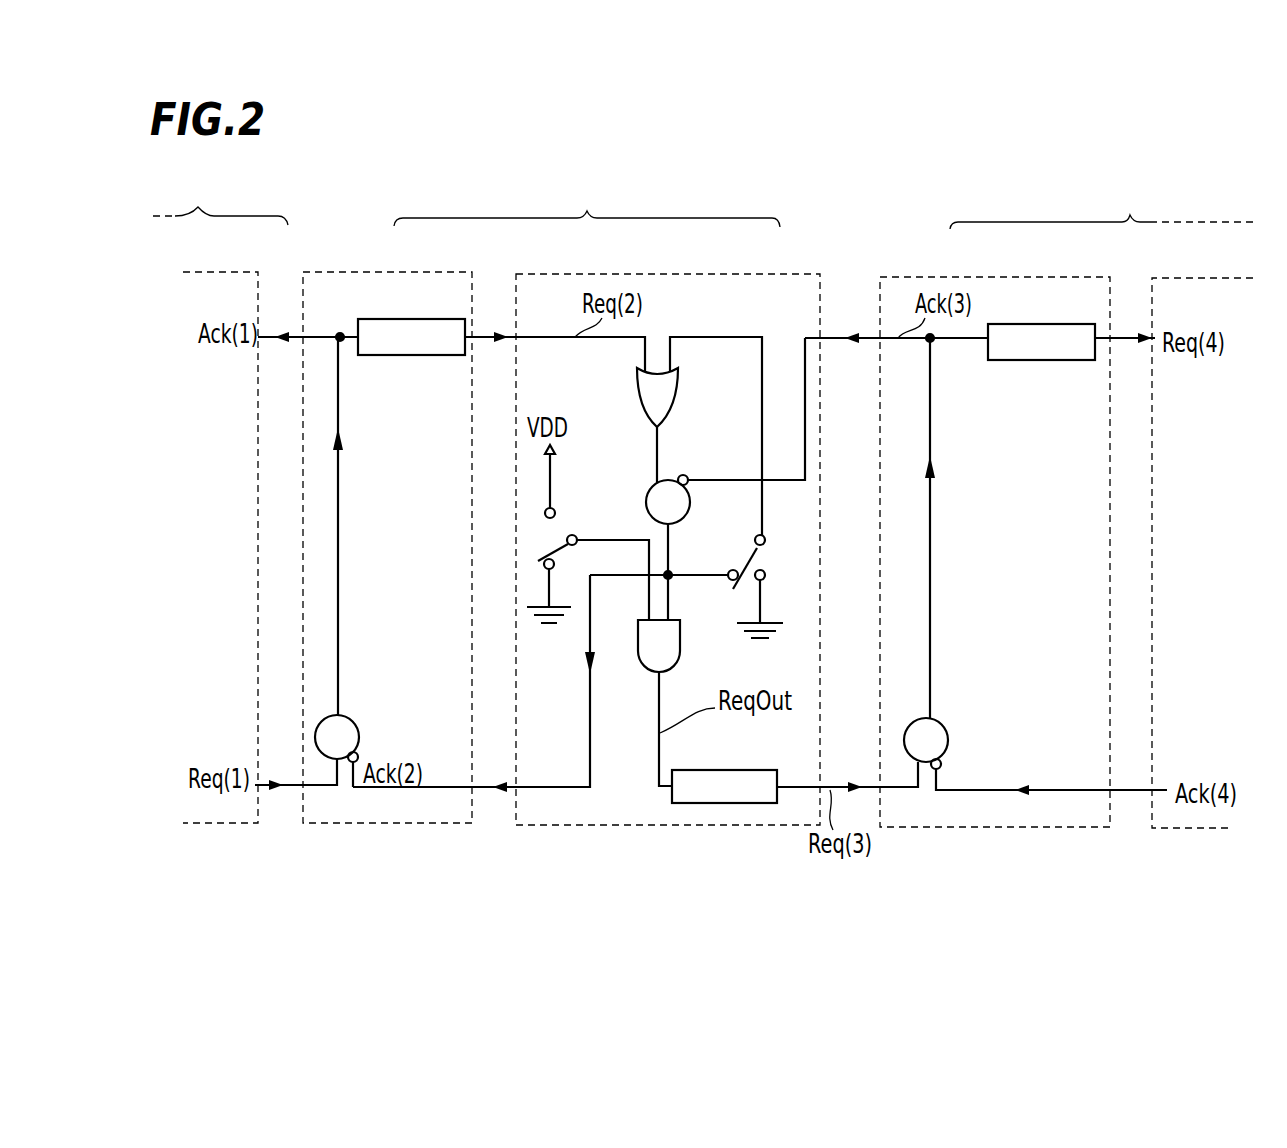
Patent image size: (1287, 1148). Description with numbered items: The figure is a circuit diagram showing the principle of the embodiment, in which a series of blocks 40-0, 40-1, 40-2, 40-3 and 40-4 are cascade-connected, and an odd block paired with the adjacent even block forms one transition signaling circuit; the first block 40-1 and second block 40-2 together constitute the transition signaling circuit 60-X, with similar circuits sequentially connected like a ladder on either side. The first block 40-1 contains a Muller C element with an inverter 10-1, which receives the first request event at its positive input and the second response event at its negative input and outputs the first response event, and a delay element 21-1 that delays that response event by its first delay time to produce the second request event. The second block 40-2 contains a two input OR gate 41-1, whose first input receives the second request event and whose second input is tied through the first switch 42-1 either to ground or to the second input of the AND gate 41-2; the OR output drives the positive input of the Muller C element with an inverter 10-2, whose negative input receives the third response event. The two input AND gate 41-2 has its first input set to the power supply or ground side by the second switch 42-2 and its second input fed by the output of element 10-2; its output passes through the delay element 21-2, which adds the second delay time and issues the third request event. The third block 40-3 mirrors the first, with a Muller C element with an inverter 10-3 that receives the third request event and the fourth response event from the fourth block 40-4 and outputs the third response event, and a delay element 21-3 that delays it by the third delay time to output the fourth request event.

The transition signaling circuit 60-X is at (587, 201).
The block 40-0 is at (212, 273).
The first block 40-1 is at (376, 273).
The second block 40-2 is at (692, 275).
The third block 40-3 is at (936, 277).
The fourth block 40-4 is at (1178, 278).
The first delay element 21-1 is at (423, 356).
The second delay element 21-2 is at (712, 770).
The third delay element 21-3 is at (1058, 360).
The first Muller C element with an inverter 10-1 is at (347, 713).
The second Muller C element with an inverter 10-2 is at (650, 491).
The third Muller C element with an inverter 10-3 is at (942, 713).
The two input OR gate 41-1 is at (677, 397).
The two input AND gate 41-2 is at (680, 637).
The first switch 42-1 is at (762, 560).
The second switch 42-2 is at (548, 538).